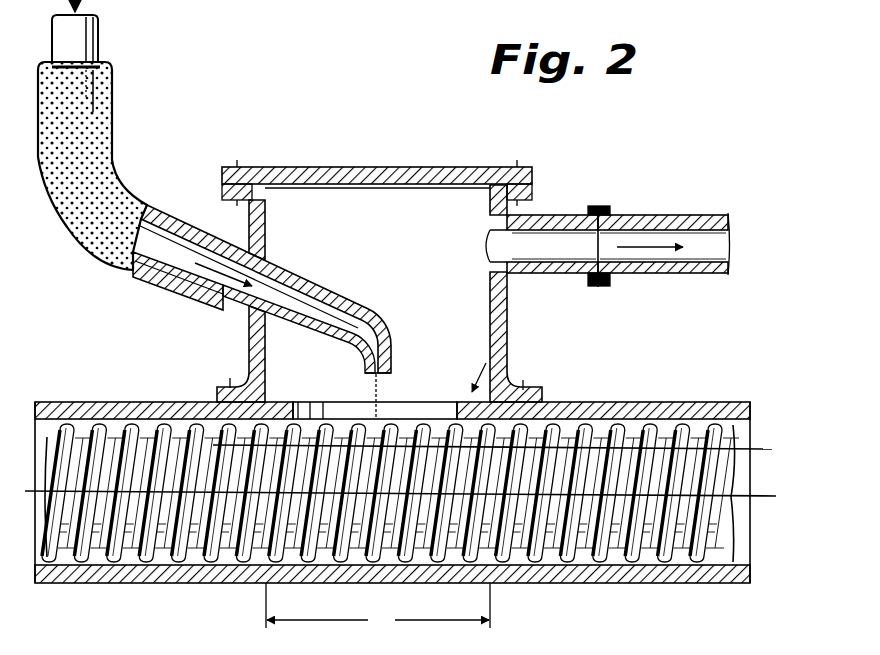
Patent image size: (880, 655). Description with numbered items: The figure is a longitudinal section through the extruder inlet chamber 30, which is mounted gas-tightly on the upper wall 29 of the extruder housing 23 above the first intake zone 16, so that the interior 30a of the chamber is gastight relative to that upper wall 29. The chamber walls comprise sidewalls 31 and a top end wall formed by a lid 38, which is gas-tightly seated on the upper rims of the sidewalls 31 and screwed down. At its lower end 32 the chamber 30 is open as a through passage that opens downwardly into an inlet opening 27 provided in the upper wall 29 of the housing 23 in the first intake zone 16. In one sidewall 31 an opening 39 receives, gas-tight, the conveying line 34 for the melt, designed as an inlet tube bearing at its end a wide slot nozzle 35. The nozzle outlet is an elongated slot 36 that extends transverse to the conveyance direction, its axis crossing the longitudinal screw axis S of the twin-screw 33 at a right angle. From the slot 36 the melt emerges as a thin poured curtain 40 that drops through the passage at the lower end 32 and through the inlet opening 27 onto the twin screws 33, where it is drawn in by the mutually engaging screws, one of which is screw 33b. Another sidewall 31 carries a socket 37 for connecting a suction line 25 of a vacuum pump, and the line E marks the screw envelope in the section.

The conveying line 34 is at (80, 42).
The chamber sidewalls 31 is at (272, 207).
The lid 38 is at (390, 167).
The interior of the inlet chamber 30a is at (403, 239).
The socket 37 is at (558, 215).
The suction line 25 is at (687, 215).
The inlet chamber 30 is at (509, 307).
The lower end of the chamber 32 is at (508, 350).
The upper wall of the extruder housing 29 is at (571, 404).
The extruder housing 23 is at (663, 403).
The inlet opening 27 is at (455, 411).
The wide slot nozzle 35 is at (373, 345).
The elongated slot 36 is at (383, 388).
The poured curtain 40 is at (373, 393).
The opening 39 is at (248, 312).
The twin-screw 33 is at (390, 524).
The twin-screw 33b is at (137, 551).
The screw envelope line E is at (763, 446).
The longitudinal screw means S is at (404, 494).
The first intake zone 16 is at (378, 609).